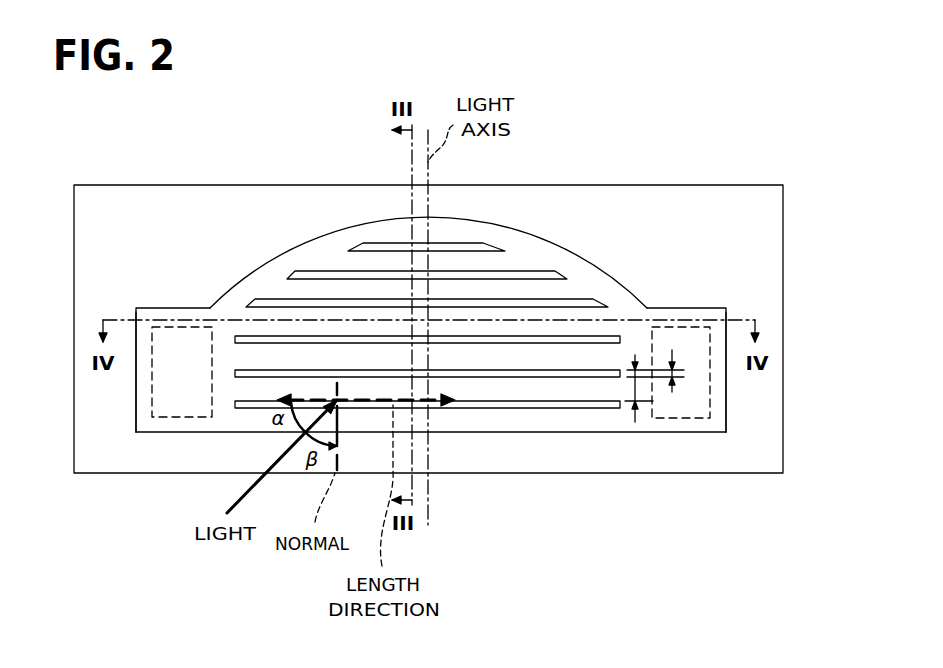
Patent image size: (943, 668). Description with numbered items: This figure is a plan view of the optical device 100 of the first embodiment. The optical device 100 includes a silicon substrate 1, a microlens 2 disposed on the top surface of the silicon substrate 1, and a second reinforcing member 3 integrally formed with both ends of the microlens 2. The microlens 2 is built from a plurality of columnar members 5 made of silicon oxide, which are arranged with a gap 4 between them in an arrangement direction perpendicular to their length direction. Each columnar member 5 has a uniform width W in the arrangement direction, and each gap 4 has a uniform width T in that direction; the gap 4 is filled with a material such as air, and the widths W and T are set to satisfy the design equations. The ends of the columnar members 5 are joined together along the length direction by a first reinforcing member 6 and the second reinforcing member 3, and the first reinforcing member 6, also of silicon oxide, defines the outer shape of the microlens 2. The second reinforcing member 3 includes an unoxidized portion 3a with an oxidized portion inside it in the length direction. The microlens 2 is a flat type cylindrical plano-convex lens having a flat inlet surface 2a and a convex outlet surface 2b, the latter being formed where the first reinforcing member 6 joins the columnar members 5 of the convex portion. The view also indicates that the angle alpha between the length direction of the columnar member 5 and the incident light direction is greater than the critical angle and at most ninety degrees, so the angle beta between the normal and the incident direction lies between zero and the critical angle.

The optical device 100 is at (452, 286).
The silicon substrate 1 is at (783, 250).
The microlens 2 is at (332, 228).
The flat inlet surface 2a is at (545, 432).
The convex outlet surface 2b is at (530, 237).
The second reinforcing member 3 is at (148, 432).
The unoxidized portion 3a is at (176, 418).
The gap 4 is at (374, 277).
The columnar member 5 is at (475, 388).
The first reinforcing member 6 is at (577, 270).
The width of gap T is at (662, 371).
The width of columnar member W is at (637, 390).